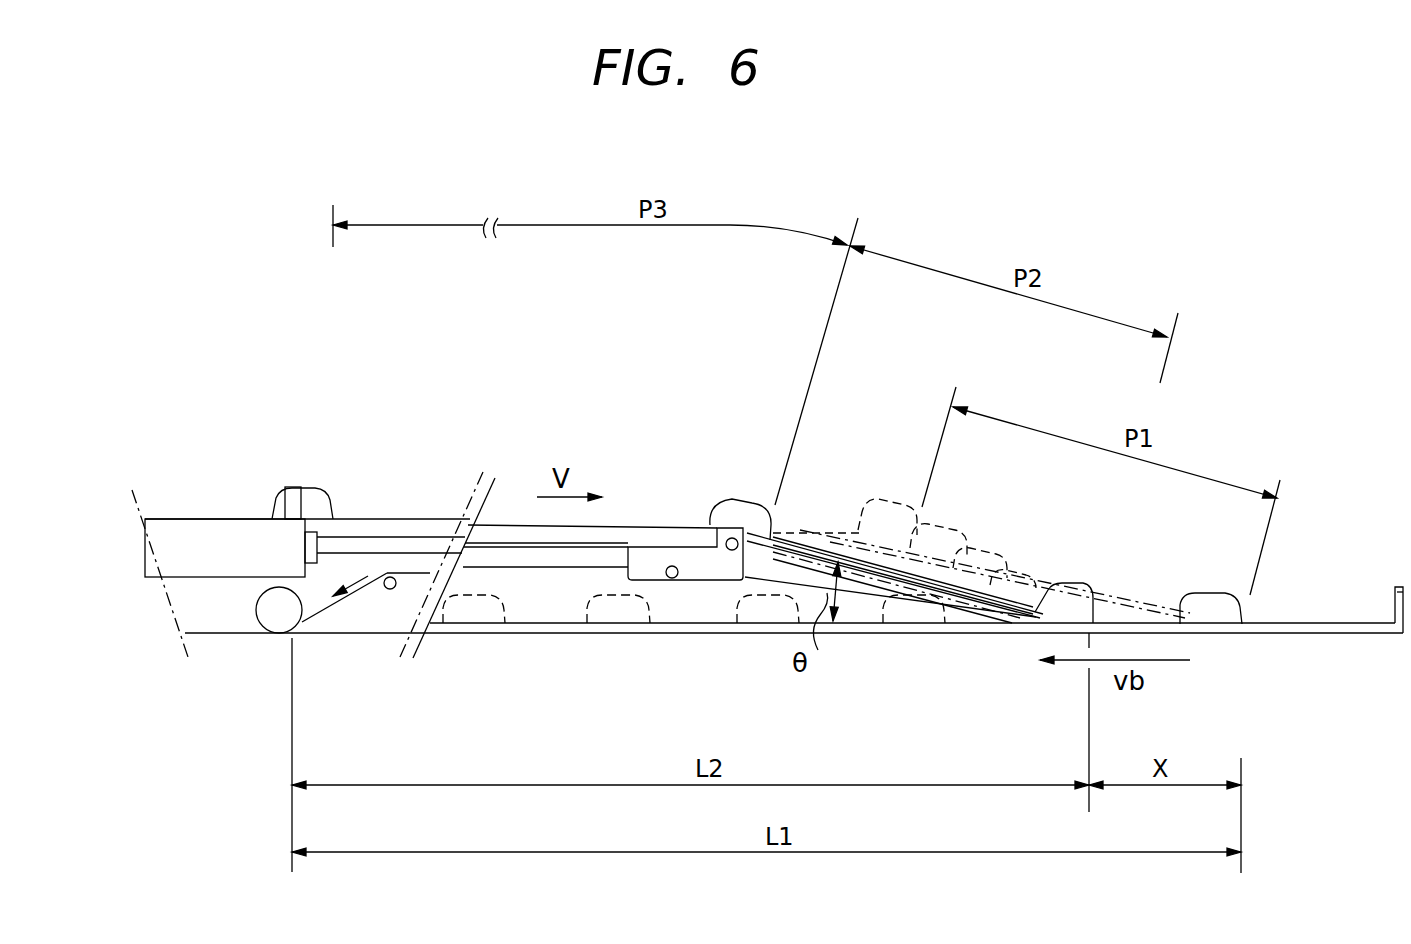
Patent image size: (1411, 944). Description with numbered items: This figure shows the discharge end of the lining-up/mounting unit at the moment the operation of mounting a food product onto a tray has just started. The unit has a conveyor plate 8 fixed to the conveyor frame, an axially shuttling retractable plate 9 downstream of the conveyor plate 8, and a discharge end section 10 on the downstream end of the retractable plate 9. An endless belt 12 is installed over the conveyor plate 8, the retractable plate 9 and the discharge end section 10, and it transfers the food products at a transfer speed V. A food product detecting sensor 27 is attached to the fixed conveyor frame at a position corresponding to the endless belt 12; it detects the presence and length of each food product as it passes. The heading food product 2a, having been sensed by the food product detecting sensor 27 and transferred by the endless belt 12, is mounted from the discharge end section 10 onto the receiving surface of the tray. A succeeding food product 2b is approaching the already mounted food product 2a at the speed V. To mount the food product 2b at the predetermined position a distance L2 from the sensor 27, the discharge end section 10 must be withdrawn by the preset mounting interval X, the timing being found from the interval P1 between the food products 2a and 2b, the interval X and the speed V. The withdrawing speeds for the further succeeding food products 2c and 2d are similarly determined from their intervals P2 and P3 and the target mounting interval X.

The conveyor plate 8 is at (185, 527).
The food product detecting sensor 27 is at (290, 488).
The food product 2d is at (325, 490).
The retractable plate 9 is at (415, 543).
The endless belt 12 is at (513, 523).
The food product 2c is at (727, 500).
The food product 2b is at (1067, 585).
The food product 2a is at (1247, 610).
The discharge end section 10 is at (1043, 620).